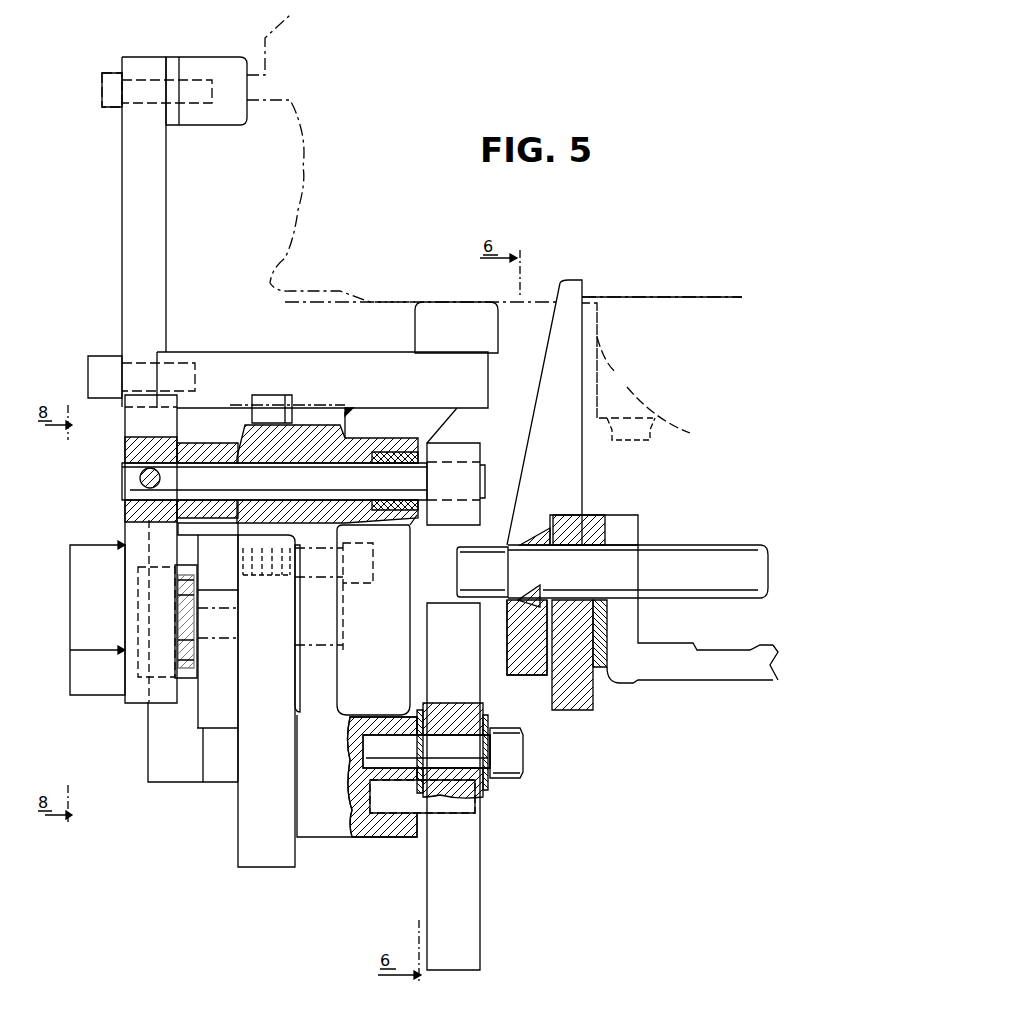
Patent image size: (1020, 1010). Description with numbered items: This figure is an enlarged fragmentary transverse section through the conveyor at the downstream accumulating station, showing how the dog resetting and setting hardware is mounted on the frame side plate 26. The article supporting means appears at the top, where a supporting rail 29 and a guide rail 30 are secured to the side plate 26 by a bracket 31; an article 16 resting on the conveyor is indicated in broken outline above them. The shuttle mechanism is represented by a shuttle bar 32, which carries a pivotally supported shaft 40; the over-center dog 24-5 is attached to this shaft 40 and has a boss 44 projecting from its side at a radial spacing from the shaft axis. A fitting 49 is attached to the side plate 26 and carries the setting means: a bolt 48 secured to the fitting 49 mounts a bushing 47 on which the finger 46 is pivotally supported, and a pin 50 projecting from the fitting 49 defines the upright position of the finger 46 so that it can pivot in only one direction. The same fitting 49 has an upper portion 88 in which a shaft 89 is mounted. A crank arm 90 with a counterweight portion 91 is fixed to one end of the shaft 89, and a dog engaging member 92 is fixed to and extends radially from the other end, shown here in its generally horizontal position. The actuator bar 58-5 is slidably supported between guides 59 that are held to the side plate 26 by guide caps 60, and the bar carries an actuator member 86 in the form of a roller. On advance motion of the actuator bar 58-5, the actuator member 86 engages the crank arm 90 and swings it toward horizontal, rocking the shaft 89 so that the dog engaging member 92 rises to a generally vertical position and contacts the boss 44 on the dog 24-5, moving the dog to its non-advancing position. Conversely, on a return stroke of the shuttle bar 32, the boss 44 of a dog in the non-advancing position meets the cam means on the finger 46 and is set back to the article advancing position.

The guide rail 30 is at (235, 57).
The article 16 is at (300, 163).
The bracket 31 is at (122, 236).
The supporting rail 29 is at (460, 302).
The dog 24-5 is at (567, 280).
The upper portion 88 is at (325, 425).
The dog engaging member 92 is at (452, 443).
The crank arm 90 is at (125, 441).
The shaft 89 is at (250, 490).
The guide 59 is at (203, 557).
The counterweight portion 91 is at (70, 590).
The actuator member 86 is at (182, 680).
The actuator bar 58-5 is at (197, 728).
The guide cap 60 is at (180, 782).
The side plate 26 is at (258, 867).
The fitting 49 is at (325, 837).
The bolt 48 is at (523, 762).
The bushing 47 is at (472, 793).
The pin 50 is at (490, 828).
The finger 46 is at (480, 889).
The boss 44 is at (457, 562).
The shaft 40 is at (698, 545).
The shuttle bar 32 is at (572, 710).